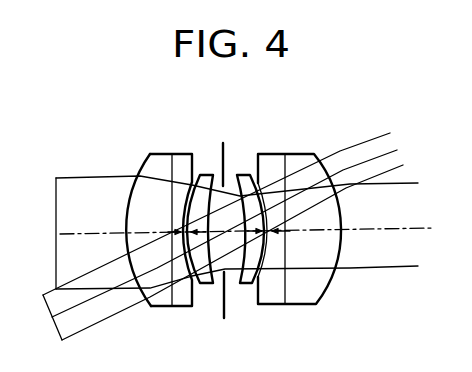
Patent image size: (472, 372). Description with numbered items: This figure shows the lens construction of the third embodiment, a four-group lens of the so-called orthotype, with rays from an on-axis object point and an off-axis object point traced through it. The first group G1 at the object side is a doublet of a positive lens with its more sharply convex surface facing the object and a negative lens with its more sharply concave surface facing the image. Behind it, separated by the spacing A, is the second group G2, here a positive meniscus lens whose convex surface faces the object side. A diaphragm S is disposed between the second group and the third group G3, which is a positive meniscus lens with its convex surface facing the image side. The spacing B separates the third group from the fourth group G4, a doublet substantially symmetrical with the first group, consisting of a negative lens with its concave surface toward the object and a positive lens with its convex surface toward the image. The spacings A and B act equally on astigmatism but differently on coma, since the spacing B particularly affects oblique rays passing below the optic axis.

The first group G1 is at (202, 124).
The second group G2 is at (209, 175).
The third group G3 is at (244, 175).
The fourth group G4 is at (328, 124).
The diaphragm S is at (223, 143).
The spacing between the first and the second group A is at (183, 231).
The spacing between the third and the fourth group B is at (268, 197).